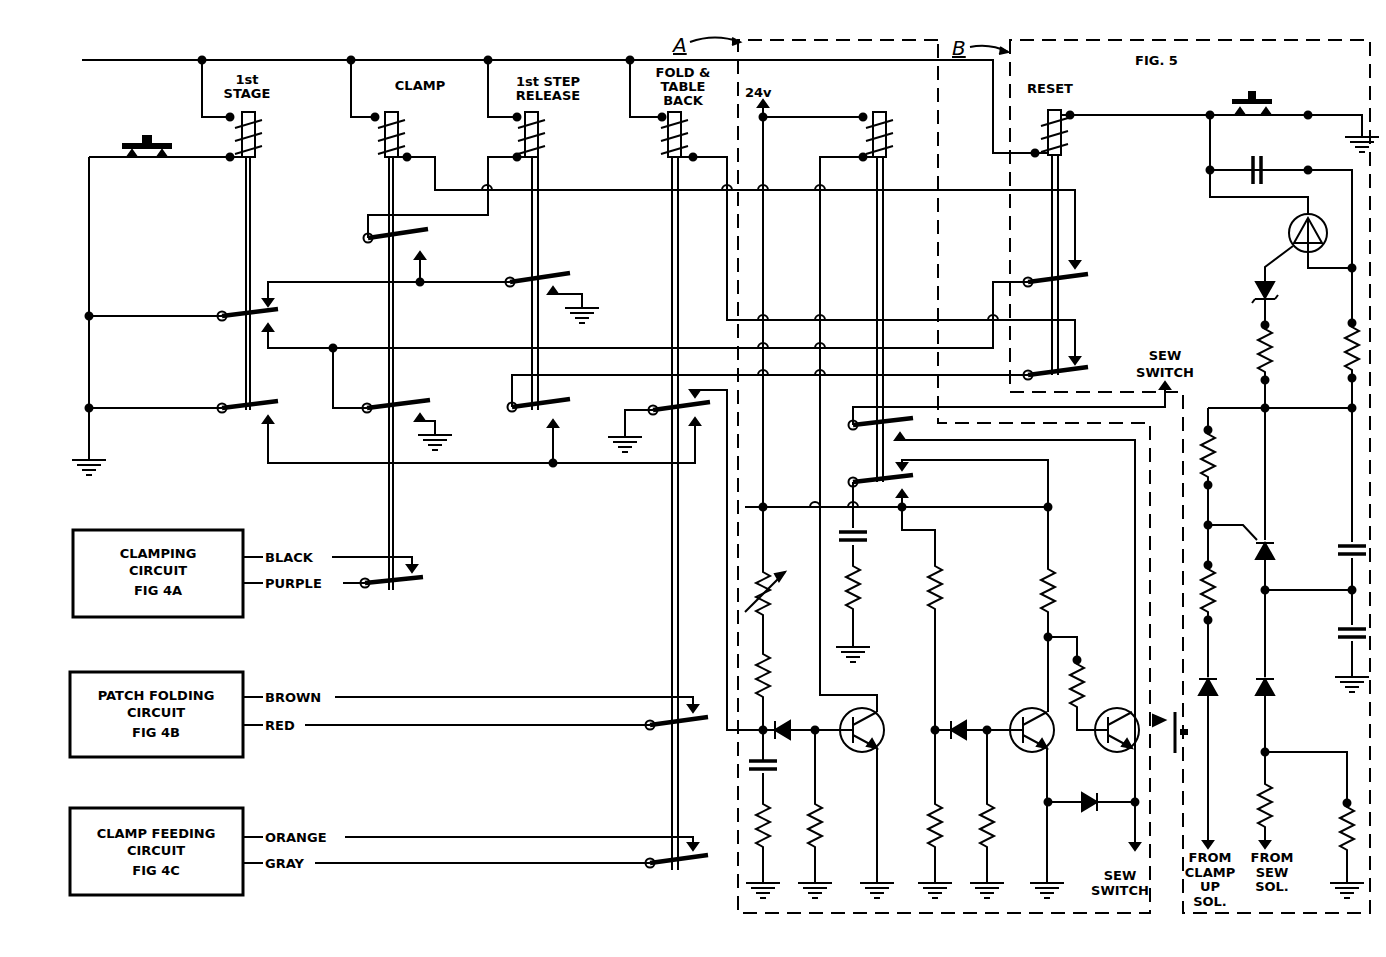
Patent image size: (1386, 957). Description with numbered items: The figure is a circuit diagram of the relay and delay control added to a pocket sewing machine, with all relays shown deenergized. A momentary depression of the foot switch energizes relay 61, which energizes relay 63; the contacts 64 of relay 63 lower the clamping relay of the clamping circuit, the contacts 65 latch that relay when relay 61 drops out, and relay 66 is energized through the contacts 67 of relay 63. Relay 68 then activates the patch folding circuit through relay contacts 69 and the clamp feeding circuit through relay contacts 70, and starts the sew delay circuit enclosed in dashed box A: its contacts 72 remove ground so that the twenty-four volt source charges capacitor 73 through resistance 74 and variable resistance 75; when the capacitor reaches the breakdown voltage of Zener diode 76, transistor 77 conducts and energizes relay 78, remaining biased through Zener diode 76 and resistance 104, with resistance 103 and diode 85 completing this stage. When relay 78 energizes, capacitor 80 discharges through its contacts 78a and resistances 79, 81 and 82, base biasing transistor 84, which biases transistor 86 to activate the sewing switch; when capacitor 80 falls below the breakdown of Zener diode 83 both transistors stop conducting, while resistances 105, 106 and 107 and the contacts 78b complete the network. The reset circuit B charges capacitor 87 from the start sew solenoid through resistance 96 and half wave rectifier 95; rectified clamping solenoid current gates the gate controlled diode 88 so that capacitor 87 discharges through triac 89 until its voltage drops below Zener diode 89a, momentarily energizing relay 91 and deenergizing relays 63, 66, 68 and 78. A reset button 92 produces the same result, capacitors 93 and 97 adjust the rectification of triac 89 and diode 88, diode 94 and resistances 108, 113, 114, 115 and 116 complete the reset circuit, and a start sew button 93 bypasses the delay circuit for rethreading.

The relay 61 is at (258, 140).
The relay 63 is at (405, 135).
The contacts of relay 63 64 is at (425, 572).
The contacts of relay 63 65 is at (440, 410).
The relay 66 is at (548, 138).
The contacts of relay 63 67 is at (432, 240).
The relay 68 is at (685, 135).
The relay contacts 69 is at (702, 712).
The relay contacts 70 is at (702, 850).
The contacts of relay 68 72 is at (704, 412).
The capacitor 73 is at (778, 760).
The resistance 74 is at (770, 688).
The variable resistance 75 is at (772, 598).
The Zener diode 76 is at (788, 715).
The transistor 77 is at (852, 748).
The relay 78 is at (890, 128).
The contacts of relay 78 78a is at (915, 480).
The contacts of relay 78 78b is at (912, 420).
The resistance 79 is at (860, 592).
The capacitor 80 is at (868, 538).
The resistance 81 is at (942, 592).
The resistance 82 is at (942, 830).
The Zener diode 83 is at (962, 716).
The transistor 84 is at (1022, 748).
The diode 85 is at (1085, 815).
The transistor 86 is at (1107, 748).
The capacitor 87 is at (1337, 630).
The gate controlled diode 88 is at (1275, 553).
The silicon controlled rectifier (triac) 89 is at (1290, 222).
The Zener diode 89a is at (1262, 288).
The relay 91 is at (1068, 135).
The reset button 92 is at (1277, 107).
The capacitor 93 is at (1332, 545).
The diode 94 is at (1218, 690).
The half wave silicon diode rectifier 95 is at (1275, 690).
The resistance 96 is at (1272, 800).
The capacitor 97 is at (1275, 142).
The resistance 103 is at (782, 826).
The resistance 104 is at (822, 830).
The resistance 105 is at (994, 830).
The resistance 106 is at (1055, 595).
The resistance 107 is at (1084, 688).
The resistance 108 is at (1340, 830).
The resistance 113 is at (1215, 595).
The resistance 114 is at (1215, 460).
The resistance 115 is at (1345, 345).
The resistance 116 is at (1258, 348).